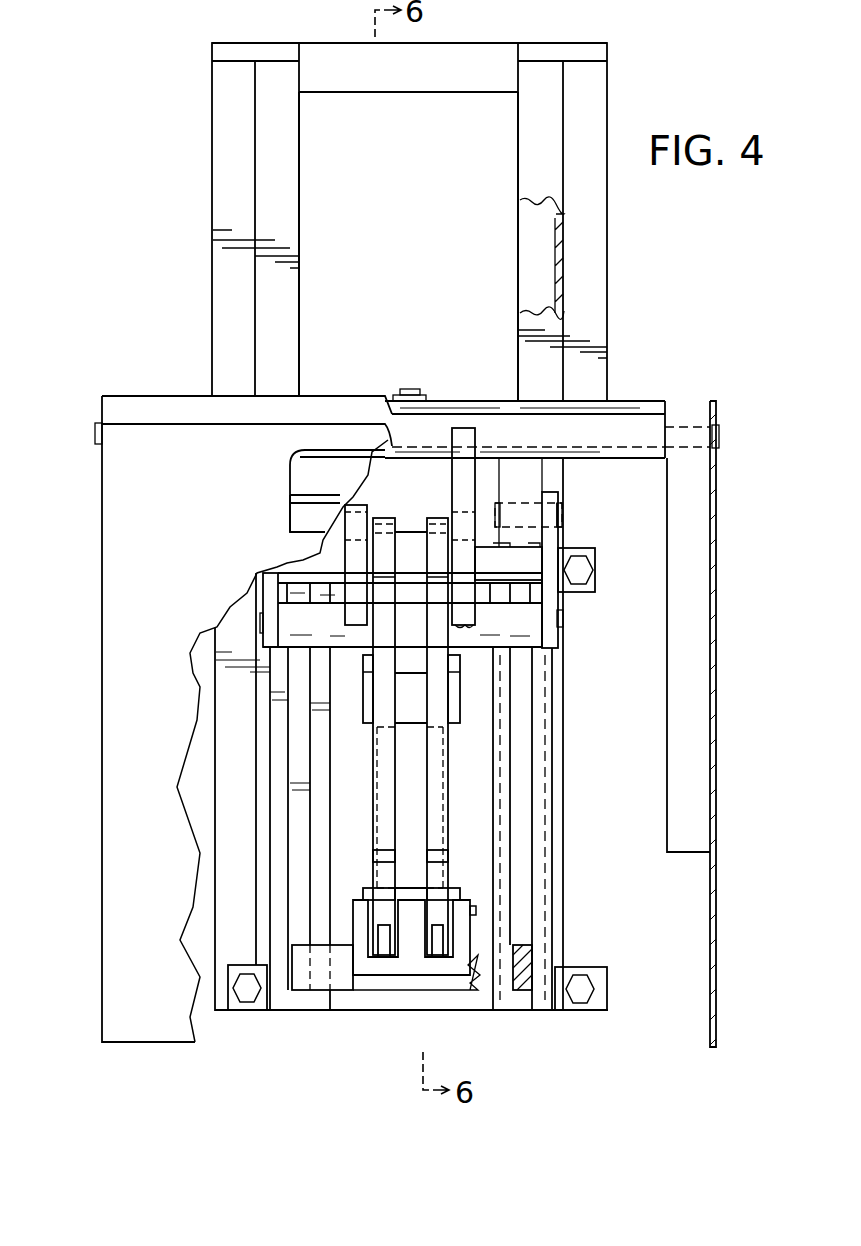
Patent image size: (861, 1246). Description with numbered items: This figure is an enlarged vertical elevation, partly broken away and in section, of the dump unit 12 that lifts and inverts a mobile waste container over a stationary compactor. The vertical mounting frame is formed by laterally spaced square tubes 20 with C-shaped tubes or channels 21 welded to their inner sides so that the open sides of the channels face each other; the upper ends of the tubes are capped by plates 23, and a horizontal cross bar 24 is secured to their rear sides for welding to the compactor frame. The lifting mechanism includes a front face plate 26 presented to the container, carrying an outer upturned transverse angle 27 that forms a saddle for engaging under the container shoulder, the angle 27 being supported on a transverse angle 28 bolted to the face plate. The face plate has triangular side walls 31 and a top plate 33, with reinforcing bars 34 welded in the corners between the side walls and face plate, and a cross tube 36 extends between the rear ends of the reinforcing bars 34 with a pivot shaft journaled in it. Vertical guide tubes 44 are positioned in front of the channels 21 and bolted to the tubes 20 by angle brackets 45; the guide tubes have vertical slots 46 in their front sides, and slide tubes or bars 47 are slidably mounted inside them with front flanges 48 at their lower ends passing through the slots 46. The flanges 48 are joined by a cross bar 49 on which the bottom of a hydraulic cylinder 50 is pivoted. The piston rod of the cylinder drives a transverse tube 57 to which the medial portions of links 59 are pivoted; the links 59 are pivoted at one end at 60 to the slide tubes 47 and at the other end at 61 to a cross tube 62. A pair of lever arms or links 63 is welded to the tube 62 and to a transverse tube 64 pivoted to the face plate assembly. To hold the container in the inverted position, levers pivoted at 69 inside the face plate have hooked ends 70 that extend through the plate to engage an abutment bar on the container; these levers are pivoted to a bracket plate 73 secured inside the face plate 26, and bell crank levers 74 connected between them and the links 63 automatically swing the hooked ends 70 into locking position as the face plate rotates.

The dump unit 12 is at (643, 388).
The square tubes 20 is at (212, 272).
The C-shaped tubes or channels 21 is at (299, 278).
The plates 23 is at (270, 48).
The horizontal cross bar 24 is at (463, 57).
The front face plate 26 is at (115, 547).
The outer upturned transverse angle 27 is at (303, 476).
The transverse angle 28 is at (302, 513).
The triangular side walls 31 is at (102, 747).
The top plate 33 is at (113, 403).
The reinforcing bars 34 is at (695, 650).
The cross tube 36 is at (640, 408).
The vertical guide tubes 44 is at (280, 833).
The angle brackets 45 is at (590, 548).
The vertical slots 46 is at (295, 742).
The slide tubes or bars 47 is at (527, 482).
The front flanges 48 is at (527, 992).
The cross bar 49 is at (345, 990).
The hydraulic cylinder 50 is at (405, 755).
The transverse tube 57 is at (522, 577).
The links 59 is at (268, 586).
The pivot 60 is at (565, 515).
The pivot 61 is at (568, 630).
The cross tube 62 is at (522, 637).
The lever arms or links 63 is at (455, 480).
The transverse tube 64 is at (580, 448).
The pivot 69 is at (472, 910).
The hooked ends 70 is at (383, 865).
The bracket plate 73 is at (392, 968).
The bell crank levers 74 is at (380, 797).